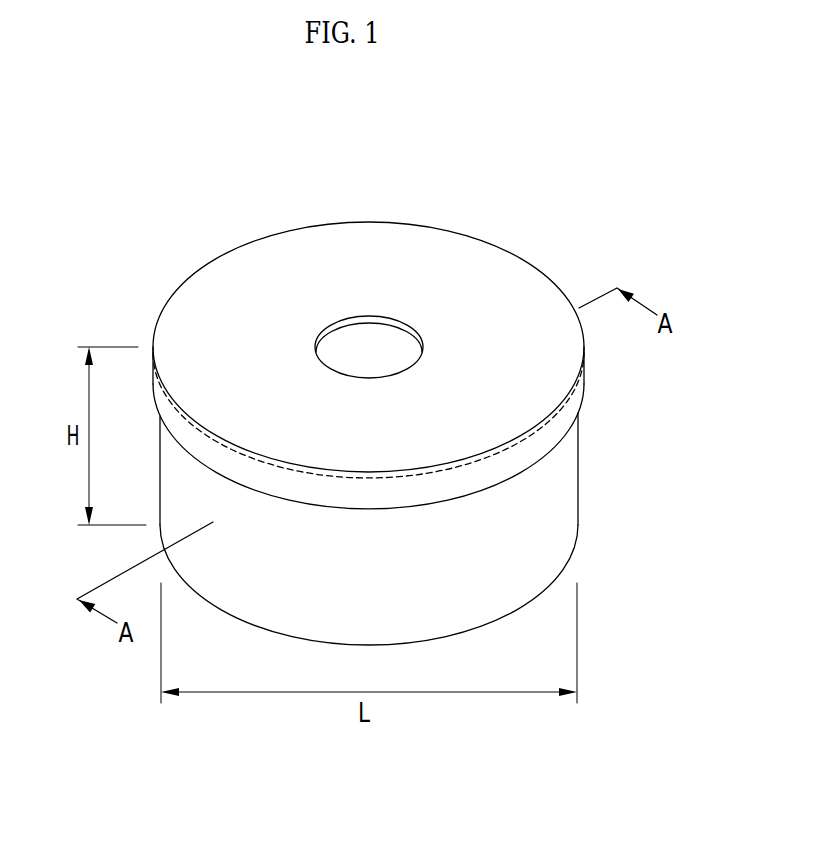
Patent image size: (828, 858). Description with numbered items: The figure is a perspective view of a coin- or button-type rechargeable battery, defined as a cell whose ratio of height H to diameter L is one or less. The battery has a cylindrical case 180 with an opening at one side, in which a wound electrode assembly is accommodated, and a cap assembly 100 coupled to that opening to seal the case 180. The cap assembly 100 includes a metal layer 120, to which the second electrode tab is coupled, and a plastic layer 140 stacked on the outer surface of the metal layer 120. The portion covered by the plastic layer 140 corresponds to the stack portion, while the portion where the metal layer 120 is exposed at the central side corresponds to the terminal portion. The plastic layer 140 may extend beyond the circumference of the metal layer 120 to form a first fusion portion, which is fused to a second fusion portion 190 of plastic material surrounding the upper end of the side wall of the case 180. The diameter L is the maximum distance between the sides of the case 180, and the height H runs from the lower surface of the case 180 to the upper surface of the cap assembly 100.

The cap assembly 100 is at (412, 407).
The metal layer 120 is at (368, 338).
The plastic layer 140 is at (466, 255).
The case 180 is at (596, 483).
The second fusion portion 190 is at (582, 392).